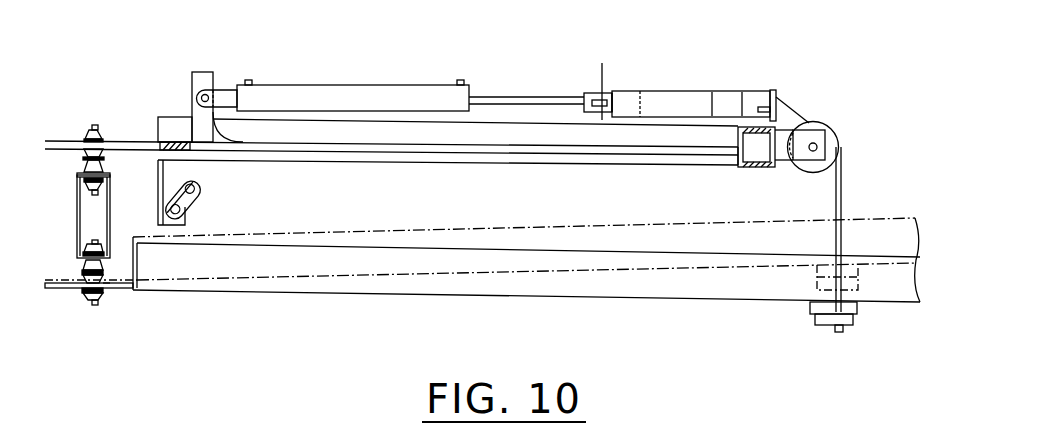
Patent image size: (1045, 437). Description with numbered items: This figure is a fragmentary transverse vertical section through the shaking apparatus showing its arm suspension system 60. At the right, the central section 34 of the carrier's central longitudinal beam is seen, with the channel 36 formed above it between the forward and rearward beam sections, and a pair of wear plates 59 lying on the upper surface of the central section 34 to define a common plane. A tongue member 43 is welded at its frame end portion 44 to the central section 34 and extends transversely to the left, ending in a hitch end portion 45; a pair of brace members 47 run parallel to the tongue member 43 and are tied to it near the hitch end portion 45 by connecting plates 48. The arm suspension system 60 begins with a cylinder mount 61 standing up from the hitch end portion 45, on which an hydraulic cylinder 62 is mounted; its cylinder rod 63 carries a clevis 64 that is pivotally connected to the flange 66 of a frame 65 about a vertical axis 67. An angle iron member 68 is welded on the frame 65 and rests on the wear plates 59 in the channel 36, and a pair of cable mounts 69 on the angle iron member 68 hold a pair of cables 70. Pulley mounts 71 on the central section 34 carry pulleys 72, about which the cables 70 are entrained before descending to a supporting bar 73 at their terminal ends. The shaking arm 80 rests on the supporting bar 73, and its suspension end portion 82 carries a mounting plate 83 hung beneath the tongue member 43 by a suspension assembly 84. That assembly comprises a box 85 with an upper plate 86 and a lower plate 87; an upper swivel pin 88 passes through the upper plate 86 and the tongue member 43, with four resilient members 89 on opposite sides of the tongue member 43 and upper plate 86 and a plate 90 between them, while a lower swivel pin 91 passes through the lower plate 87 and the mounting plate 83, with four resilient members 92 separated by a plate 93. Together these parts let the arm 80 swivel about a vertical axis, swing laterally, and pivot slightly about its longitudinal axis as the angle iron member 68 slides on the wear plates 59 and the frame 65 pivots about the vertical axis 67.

The central section 34 is at (737, 155).
The channel 36 is at (751, 103).
The tongue member 43 is at (508, 154).
The frame end portion 44 is at (708, 155).
The hitch end portion 45 is at (50, 157).
The brace members 47 is at (535, 131).
The connecting plates 48 is at (173, 150).
The wear plates 59 is at (712, 118).
The arm suspension system 60 is at (583, 70).
The cylinder mount 61 is at (203, 78).
The hydraulic cylinder 62 is at (305, 92).
The cylinder rod 63 is at (518, 97).
The clevis 64 is at (588, 96).
The frame 65 is at (664, 97).
The flange 66 is at (611, 97).
The vertical axis 67 is at (604, 70).
The angle iron member 68 is at (779, 104).
The cable mounts 69 is at (774, 90).
The cables 70 is at (842, 170).
The pulley mounts 71 is at (788, 162).
The pulleys 72 is at (829, 128).
The supporting bar 73 is at (817, 275).
The shaking arm 80 is at (683, 267).
The suspension end portion 82 is at (185, 280).
The mounting plate 83 is at (135, 282).
The suspension assembly 84 is at (110, 208).
The box 85 is at (78, 219).
The upper plate 86 is at (103, 175).
The lower plate 87 is at (107, 253).
The upper swivel pin 88 is at (100, 131).
The resilient members 89 is at (102, 140).
The plate 90 is at (88, 159).
The lower swivel pin 91 is at (97, 305).
The resilient members 92 is at (80, 268).
The plate 93 is at (108, 275).